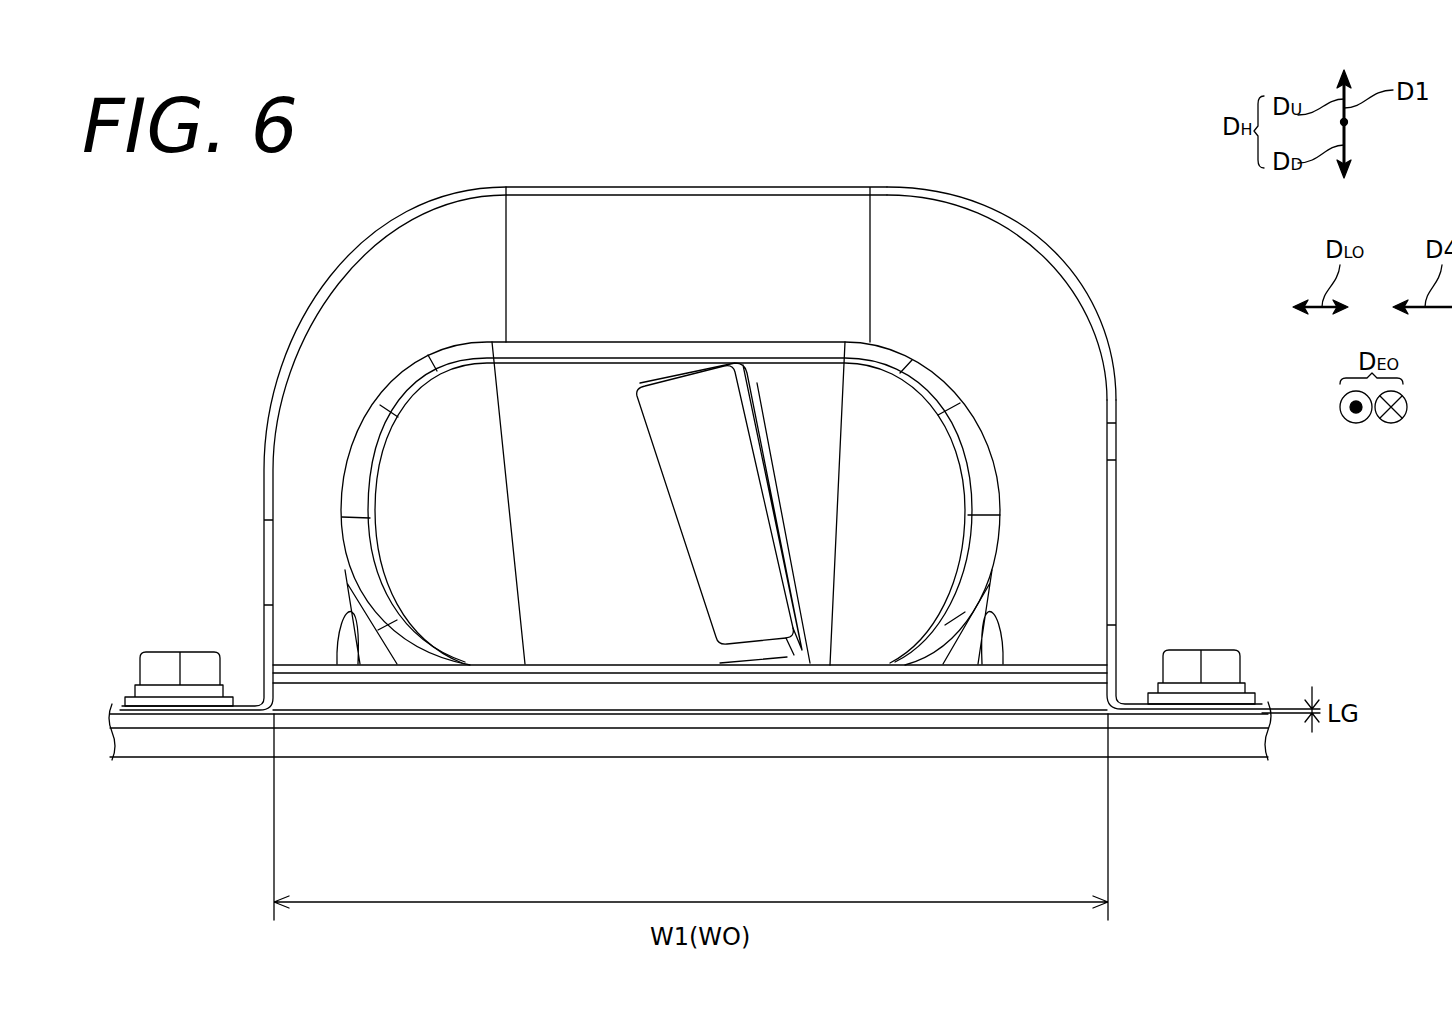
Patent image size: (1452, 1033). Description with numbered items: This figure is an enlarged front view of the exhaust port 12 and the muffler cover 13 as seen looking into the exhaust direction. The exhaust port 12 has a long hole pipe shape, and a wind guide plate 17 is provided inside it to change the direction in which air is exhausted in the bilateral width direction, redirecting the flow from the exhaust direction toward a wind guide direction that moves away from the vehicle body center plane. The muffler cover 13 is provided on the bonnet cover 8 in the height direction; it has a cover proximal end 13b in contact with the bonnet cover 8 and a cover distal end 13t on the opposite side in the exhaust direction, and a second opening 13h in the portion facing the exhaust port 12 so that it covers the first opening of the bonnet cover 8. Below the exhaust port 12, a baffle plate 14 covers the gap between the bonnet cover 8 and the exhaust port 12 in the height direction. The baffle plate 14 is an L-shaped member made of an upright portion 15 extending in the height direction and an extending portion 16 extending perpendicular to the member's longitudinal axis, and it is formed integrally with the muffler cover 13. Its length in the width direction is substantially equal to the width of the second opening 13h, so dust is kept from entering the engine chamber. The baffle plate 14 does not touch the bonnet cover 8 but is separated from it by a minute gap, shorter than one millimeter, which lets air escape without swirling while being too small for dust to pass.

The bonnet cover 8 is at (113, 712).
The exhaust port 12 is at (413, 652).
The muffler cover 13 is at (720, 368).
The second opening 13h is at (953, 210).
The cover distal end 13t is at (990, 208).
The cover proximal end 13b is at (1133, 703).
The baffle plate 14 is at (690, 771).
The upright portion 15 is at (645, 700).
The extending portion 16 is at (687, 677).
The wind guide plate 17 is at (773, 557).